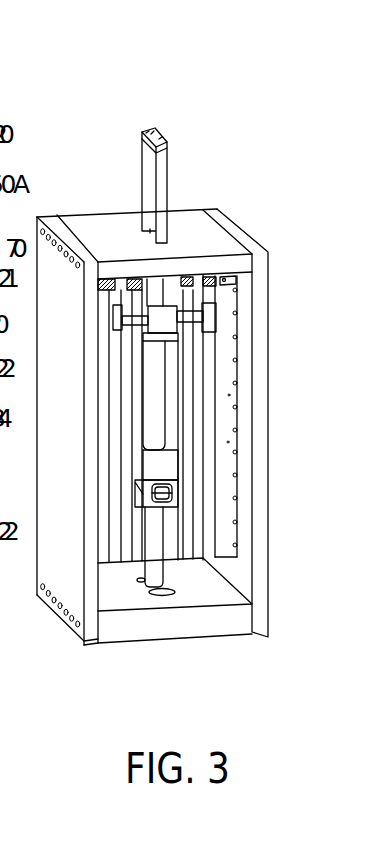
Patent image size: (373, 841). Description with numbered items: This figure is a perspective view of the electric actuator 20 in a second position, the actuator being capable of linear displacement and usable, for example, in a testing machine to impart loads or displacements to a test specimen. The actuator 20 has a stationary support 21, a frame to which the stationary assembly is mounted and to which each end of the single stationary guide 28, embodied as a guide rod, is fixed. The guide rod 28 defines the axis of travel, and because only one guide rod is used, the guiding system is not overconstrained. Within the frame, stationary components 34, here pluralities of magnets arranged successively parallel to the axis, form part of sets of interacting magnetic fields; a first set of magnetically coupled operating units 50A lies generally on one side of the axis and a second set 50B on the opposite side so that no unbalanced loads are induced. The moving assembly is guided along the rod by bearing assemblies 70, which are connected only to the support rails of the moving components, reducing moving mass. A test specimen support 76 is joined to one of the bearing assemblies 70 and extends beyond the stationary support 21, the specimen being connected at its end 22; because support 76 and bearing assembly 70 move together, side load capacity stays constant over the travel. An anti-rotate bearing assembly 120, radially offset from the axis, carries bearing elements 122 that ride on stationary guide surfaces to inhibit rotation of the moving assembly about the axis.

The electric actuator 20 is at (238, 128).
The stationary support 21 is at (268, 352).
The end 22 is at (143, 132).
The stationary guide 28 is at (152, 560).
The stationary component 34 is at (222, 438).
The first set of magnetically coupled operating units 50A is at (234, 250).
The second set of magnetically coupled operating units 50B is at (117, 256).
The bearing assembly 70 is at (168, 285).
The test specimen support 76 is at (181, 116).
The anti-rotate bearing assembly 120 is at (167, 315).
The bearing element 122 is at (207, 318).